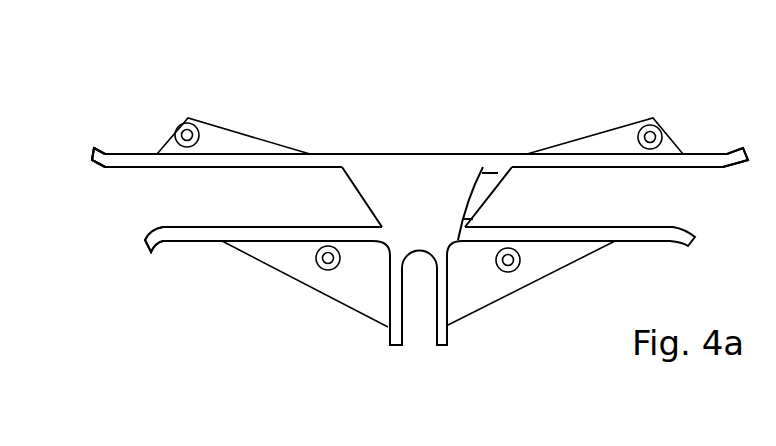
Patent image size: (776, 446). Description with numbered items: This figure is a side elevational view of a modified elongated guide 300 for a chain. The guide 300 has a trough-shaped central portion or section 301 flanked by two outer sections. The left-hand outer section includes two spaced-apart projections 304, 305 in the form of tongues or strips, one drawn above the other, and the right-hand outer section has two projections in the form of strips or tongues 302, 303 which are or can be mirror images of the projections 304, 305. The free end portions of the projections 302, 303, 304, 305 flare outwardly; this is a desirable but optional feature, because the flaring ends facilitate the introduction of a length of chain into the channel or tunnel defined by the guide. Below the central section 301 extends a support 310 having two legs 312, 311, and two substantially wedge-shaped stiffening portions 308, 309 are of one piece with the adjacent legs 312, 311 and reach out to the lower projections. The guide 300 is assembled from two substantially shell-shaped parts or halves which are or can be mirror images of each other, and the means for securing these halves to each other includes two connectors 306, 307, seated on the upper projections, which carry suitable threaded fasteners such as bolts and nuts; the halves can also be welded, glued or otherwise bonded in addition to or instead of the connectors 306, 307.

The elongated guide 300 is at (485, 130).
The trough-shaped central portion 301 is at (432, 180).
The projection 302 is at (713, 158).
The projection 303 is at (698, 243).
The projection 304 is at (103, 167).
The projection 305 is at (172, 235).
The connector 306 is at (222, 135).
The connector 307 is at (603, 140).
The wedge-shaped stiffening portion 308 is at (292, 267).
The wedge-shaped stiffening portion 309 is at (542, 260).
The support 310 is at (420, 328).
The leg 311 is at (440, 345).
The leg 312 is at (397, 345).